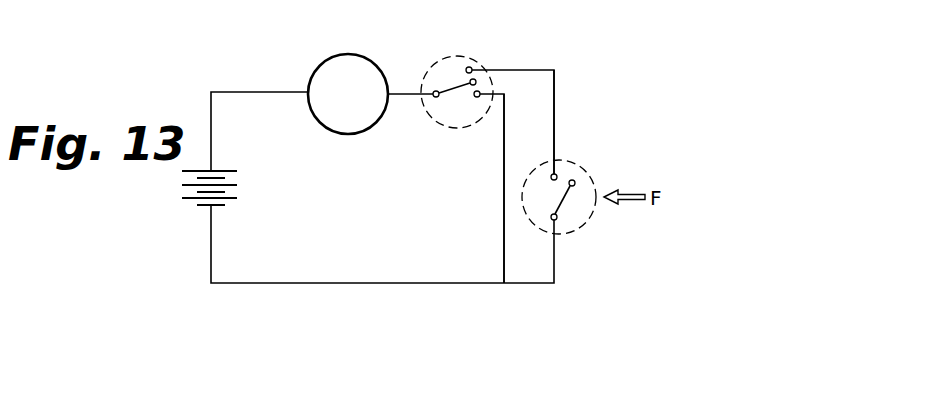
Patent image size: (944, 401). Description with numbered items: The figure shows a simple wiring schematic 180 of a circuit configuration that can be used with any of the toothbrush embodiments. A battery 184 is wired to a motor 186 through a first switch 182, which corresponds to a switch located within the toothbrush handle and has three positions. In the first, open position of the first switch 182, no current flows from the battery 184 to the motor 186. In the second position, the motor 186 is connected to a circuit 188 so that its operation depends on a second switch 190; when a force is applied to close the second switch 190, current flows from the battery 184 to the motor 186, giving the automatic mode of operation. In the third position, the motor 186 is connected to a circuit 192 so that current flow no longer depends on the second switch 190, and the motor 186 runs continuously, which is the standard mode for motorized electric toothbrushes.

The wiring schematic 180 is at (276, 64).
The first switch 182 is at (457, 56).
The battery 184 is at (222, 169).
The motor 186 is at (347, 54).
The circuit 188 is at (555, 92).
The second switch 190 is at (596, 183).
The circuit 192 is at (503, 232).